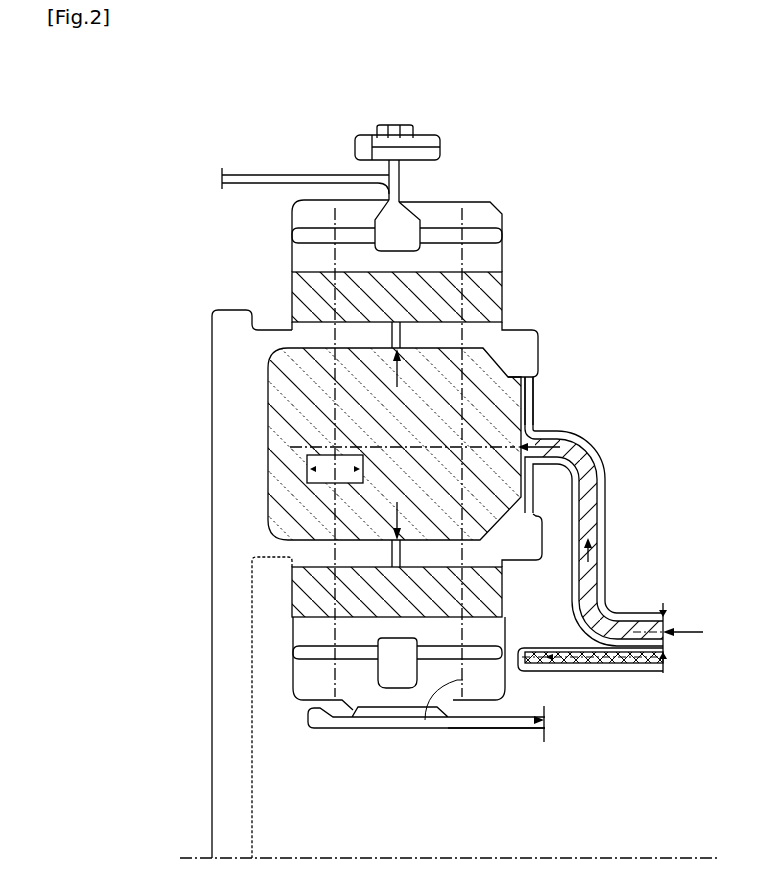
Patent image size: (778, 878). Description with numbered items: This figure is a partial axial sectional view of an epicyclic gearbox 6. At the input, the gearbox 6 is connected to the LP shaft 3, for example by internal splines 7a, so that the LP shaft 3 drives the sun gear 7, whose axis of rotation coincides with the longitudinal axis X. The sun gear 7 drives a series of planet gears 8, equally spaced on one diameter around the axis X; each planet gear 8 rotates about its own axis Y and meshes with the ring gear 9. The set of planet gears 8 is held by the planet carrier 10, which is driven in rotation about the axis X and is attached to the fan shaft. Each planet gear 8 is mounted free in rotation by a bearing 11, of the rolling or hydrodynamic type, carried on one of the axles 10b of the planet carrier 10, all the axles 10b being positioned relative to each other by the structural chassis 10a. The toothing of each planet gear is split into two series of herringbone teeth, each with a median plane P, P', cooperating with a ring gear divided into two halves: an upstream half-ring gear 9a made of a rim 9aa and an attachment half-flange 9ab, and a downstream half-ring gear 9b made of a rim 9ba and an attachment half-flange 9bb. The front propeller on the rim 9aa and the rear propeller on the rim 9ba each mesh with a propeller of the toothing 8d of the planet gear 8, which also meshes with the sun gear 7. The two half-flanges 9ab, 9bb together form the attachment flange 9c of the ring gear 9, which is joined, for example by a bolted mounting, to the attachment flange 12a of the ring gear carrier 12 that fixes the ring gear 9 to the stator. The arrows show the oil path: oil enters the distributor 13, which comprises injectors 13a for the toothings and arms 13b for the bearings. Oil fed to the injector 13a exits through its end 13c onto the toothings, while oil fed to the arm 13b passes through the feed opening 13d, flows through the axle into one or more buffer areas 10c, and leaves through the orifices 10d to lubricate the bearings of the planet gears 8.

The LP shaft 3 is at (507, 729).
The epicyclic gearbox 6 is at (630, 273).
The sun gear 7 is at (292, 670).
The internal splines 7a is at (380, 730).
The planet gears 8 is at (292, 643).
The toothing 8d is at (300, 652).
The ring gear 9 is at (504, 202).
The upstream half-ring gear 9a is at (303, 213).
The rim 9aa is at (313, 210).
The attachment half-flange 9ab is at (392, 125).
The downstream half-ring gear 9b is at (492, 222).
The rim 9ba is at (450, 210).
The attachment half-flange 9bb is at (408, 125).
The attachment flange 9c is at (373, 73).
The planet carrier 10 is at (524, 336).
The structural chassis 10a is at (219, 400).
The axles 10b is at (540, 543).
The buffer areas 10c is at (335, 469).
The orifices 10d is at (402, 332).
The bearing 11 is at (504, 297).
The ring gear carrier 12 is at (255, 172).
The attachment flange 12a is at (377, 127).
The distributor 13 is at (661, 584).
The injectors 13a is at (605, 672).
The arms 13b is at (601, 499).
The end 13c is at (555, 726).
The feed opening 13d is at (540, 384).
The median plane P is at (298, 688).
The median plane P' is at (444, 731).
The longitudinal axis X is at (612, 856).
The planet gear axis Y is at (538, 425).